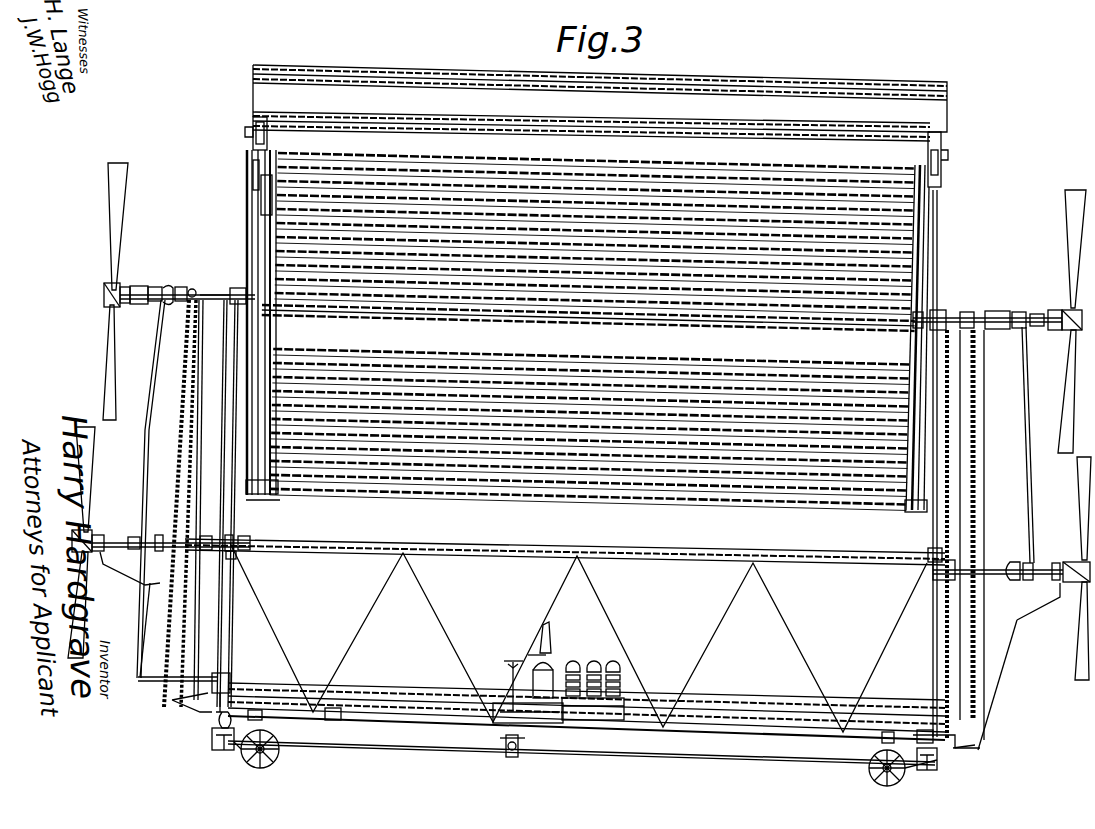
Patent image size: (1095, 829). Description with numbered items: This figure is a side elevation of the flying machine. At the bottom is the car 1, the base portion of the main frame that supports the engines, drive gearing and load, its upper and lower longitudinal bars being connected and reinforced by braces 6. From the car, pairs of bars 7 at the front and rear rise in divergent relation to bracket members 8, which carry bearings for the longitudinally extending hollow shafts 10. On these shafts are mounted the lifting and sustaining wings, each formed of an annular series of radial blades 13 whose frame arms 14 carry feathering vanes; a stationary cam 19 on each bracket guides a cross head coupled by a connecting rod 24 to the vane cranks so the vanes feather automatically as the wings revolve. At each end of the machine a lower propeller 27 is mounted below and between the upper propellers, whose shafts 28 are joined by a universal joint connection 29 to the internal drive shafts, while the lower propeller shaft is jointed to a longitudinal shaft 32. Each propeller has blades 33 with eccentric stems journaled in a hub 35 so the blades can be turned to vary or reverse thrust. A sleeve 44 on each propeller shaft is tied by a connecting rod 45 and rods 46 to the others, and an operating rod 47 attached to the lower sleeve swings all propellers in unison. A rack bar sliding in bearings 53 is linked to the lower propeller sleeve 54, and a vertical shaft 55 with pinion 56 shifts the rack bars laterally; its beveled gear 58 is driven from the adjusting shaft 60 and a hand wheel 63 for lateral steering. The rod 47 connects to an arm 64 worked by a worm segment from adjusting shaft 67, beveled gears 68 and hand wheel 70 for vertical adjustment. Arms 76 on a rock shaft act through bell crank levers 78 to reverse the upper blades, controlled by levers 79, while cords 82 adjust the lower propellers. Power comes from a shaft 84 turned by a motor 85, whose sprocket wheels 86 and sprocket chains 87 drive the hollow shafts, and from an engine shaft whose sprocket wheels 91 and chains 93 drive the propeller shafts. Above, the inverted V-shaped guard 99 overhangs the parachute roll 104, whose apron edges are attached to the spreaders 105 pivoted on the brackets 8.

The car 1 is at (395, 718).
The braces 6 is at (785, 583).
The bars 7 is at (230, 640).
The bracket members 8 is at (247, 330).
The hollow shafts 10 is at (187, 279).
The radial blades 13 is at (524, 173).
The frame arms 14 is at (270, 232).
The stationary cam 19 is at (272, 320).
The connecting rod 24 is at (915, 356).
The lower propeller 27 is at (581, 528).
The propeller shafts 28 is at (130, 449).
The universal joint connection 29 is at (576, 489).
The longitudinal shaft 32 is at (815, 556).
The propeller blades 33 is at (594, 308).
The hub 35 is at (1066, 315).
The sleeve 44 is at (1018, 315).
The connecting rod 45 is at (166, 268).
The rods 46 is at (150, 462).
The operating rod 47 is at (145, 625).
The bearings 53 is at (226, 542).
The sleeve 54 is at (162, 540).
The vertical shaft 55 is at (227, 672).
The pinion 56 is at (240, 568).
The beveled gear 58 is at (230, 688).
The adjusting shaft 60 is at (312, 690).
The hand wheel 63 is at (593, 682).
The arm 64 is at (950, 752).
The adjusting shaft 67 is at (193, 732).
The beveled gears 68 is at (520, 752).
The hand wheel 70 is at (515, 663).
The arms 76 is at (245, 290).
The bell crank levers 78 is at (165, 292).
The levers 79 is at (553, 650).
The cords 82 is at (395, 690).
The shaft 84 is at (340, 733).
The motor 85 is at (620, 682).
The sprocket wheels 86 is at (175, 725).
The sprocket chains 87 is at (1009, 556).
The sprocket wheels 91 is at (958, 313).
The chains 93 is at (963, 633).
The guard 99 is at (489, 54).
The roll 104 is at (591, 131).
The spreaders 105 is at (262, 208).